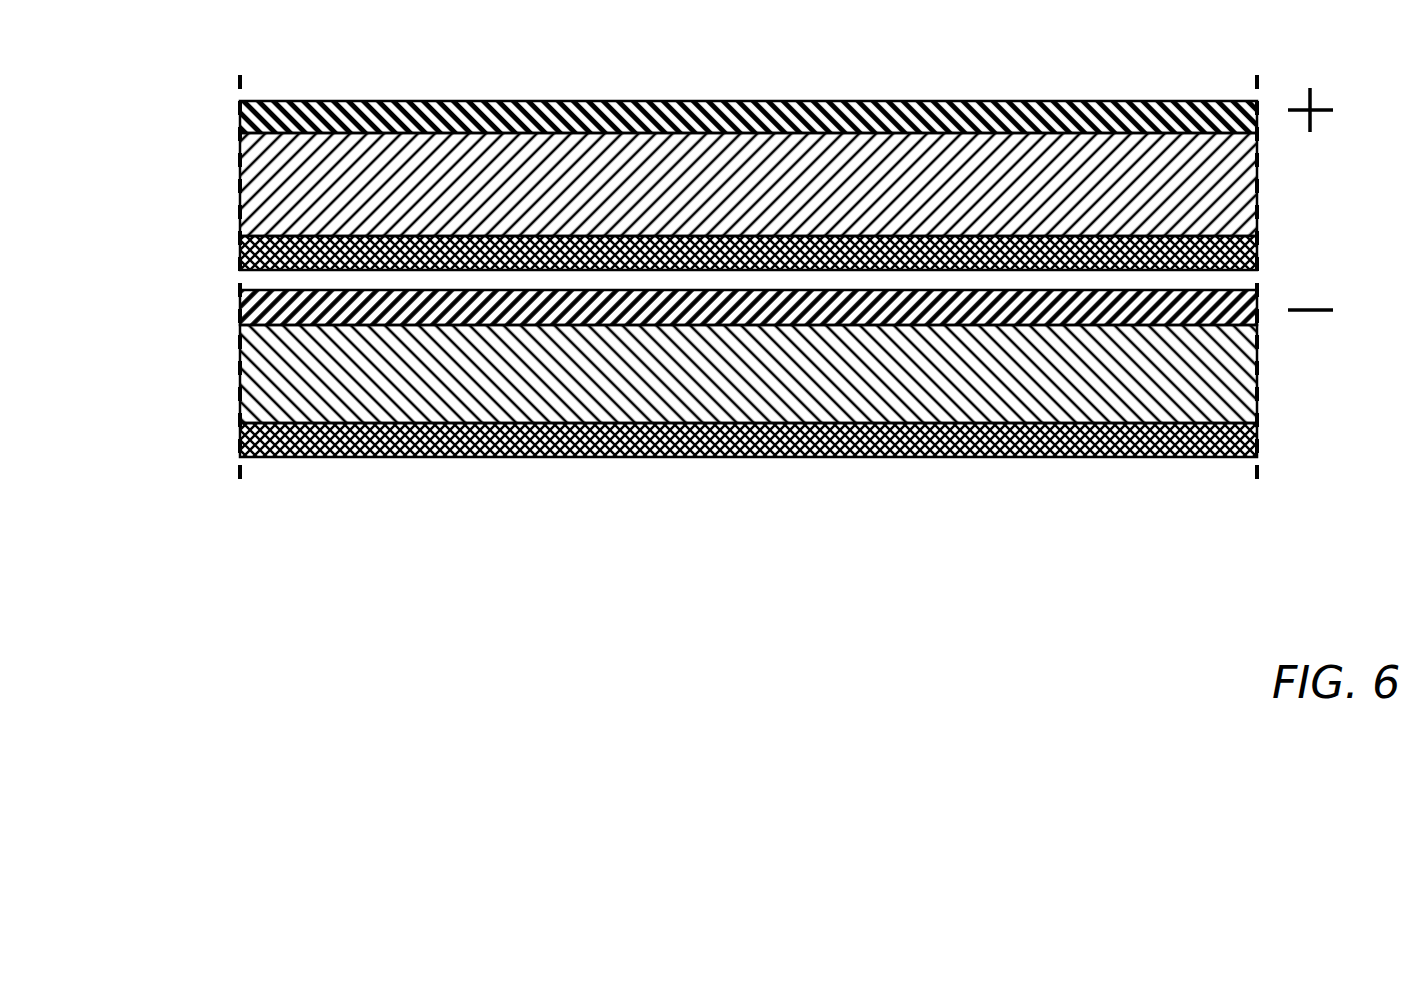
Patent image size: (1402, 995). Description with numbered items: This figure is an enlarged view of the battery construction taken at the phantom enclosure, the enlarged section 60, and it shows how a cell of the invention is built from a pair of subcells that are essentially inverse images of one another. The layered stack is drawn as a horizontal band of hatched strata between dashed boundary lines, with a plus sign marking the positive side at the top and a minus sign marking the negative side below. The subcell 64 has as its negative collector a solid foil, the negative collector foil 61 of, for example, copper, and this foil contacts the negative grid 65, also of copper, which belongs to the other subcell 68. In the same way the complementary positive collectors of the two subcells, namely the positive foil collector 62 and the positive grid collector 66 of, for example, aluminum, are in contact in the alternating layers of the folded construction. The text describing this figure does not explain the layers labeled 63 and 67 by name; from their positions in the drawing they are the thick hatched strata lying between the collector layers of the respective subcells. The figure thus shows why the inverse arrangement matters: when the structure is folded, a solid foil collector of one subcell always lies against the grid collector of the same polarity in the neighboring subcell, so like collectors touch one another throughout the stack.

The enlarged section 60 is at (192, 279).
The negative collector foil 61 is at (240, 307).
The positive foil collector 62 is at (1258, 428).
The negative electrode 63 is at (240, 402).
The subcell 64 is at (677, 513).
The negative grid 65 is at (1257, 252).
The positive grid collector 66 is at (240, 122).
The positive electrode 67 is at (240, 165).
The subcell 68 is at (800, 50).